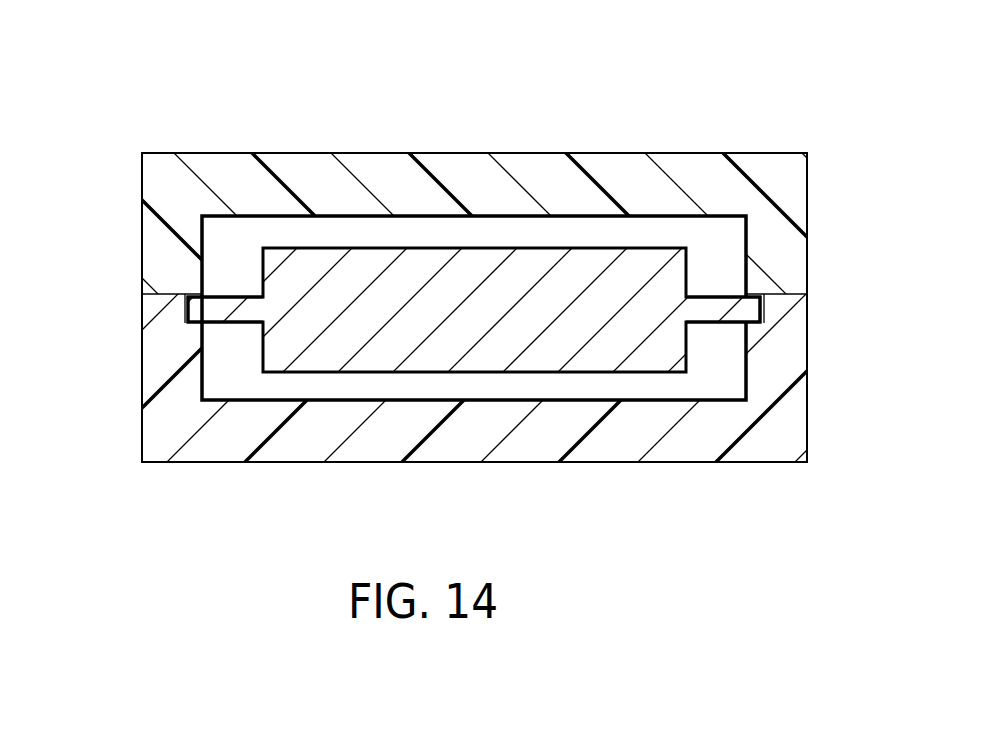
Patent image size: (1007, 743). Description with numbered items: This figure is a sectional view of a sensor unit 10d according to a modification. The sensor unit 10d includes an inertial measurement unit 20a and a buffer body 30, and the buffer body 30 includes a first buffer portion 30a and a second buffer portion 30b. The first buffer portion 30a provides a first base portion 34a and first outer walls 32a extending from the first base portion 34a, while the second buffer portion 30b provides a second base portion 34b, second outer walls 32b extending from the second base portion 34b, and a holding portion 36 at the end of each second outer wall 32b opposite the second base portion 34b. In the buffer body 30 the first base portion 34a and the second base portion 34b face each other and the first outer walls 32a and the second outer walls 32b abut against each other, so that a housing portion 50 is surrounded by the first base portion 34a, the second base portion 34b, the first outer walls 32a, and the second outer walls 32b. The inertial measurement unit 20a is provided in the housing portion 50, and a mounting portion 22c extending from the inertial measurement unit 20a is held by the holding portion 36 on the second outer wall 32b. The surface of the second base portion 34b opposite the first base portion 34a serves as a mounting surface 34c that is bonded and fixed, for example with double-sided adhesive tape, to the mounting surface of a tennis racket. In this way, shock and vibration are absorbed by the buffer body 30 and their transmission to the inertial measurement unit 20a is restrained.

The sensor unit 10d is at (666, 82).
The buffer body 30 is at (60, 225).
The first buffer portion 30a is at (152, 242).
The second buffer portion 30b is at (152, 353).
The first outer wall 32a is at (788, 250).
The second outer wall 32b is at (788, 353).
The first base portion 34a is at (383, 166).
The second base portion 34b is at (382, 442).
The mounting surface 34c is at (502, 466).
The housing portion 50 is at (607, 232).
The inertial measurement unit 20a is at (482, 262).
The mounting portion 22c is at (197, 307).
The holding portion 36 is at (203, 297).